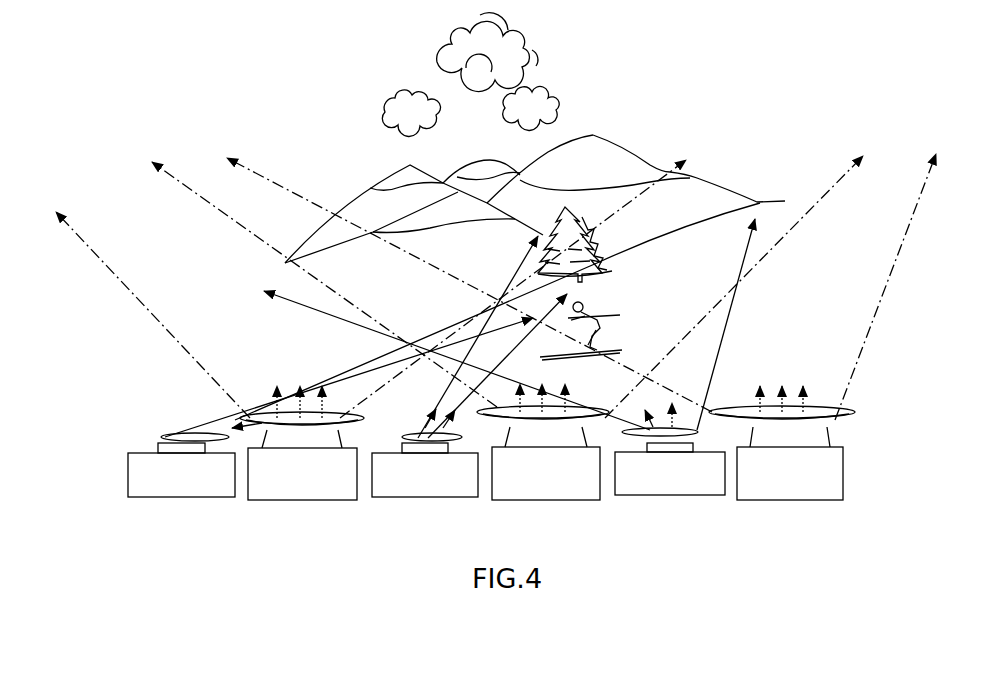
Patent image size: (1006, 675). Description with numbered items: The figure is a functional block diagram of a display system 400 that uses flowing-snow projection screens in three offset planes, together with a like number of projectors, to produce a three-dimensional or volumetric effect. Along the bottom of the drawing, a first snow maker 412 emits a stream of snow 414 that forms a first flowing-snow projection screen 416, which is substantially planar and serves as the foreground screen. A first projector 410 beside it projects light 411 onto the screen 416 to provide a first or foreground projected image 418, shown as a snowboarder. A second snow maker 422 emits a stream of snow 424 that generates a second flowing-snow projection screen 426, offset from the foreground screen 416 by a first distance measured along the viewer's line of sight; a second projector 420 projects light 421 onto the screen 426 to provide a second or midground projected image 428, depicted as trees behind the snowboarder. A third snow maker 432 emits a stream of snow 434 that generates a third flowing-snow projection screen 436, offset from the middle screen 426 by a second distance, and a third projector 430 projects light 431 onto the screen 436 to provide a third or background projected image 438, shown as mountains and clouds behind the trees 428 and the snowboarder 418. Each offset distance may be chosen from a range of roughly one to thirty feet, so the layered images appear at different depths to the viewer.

The display system 400 is at (214, 582).
The first projector 410 is at (150, 498).
The light 411 is at (169, 434).
The first snow maker 412 is at (265, 500).
The stream of snow 414 is at (365, 412).
The first flowing-snow projection screen 416 is at (108, 268).
The first projected image 418 is at (603, 311).
The second projector 420 is at (395, 498).
The light 421 is at (462, 437).
The second snow maker 422 is at (512, 500).
The stream of snow 424 is at (587, 409).
The second flowing-snow projection screen 426 is at (821, 208).
The second projected image 428 is at (611, 270).
The third projector 430 is at (635, 496).
The light 431 is at (700, 432).
The third snow maker 432 is at (753, 500).
The stream of snow 434 is at (848, 410).
The third flowing-snow projection screen 436 is at (887, 295).
The third projected image 438 is at (591, 134).